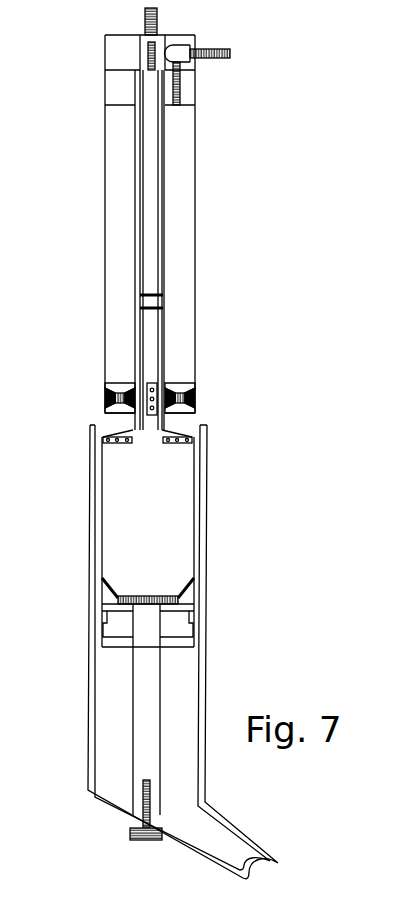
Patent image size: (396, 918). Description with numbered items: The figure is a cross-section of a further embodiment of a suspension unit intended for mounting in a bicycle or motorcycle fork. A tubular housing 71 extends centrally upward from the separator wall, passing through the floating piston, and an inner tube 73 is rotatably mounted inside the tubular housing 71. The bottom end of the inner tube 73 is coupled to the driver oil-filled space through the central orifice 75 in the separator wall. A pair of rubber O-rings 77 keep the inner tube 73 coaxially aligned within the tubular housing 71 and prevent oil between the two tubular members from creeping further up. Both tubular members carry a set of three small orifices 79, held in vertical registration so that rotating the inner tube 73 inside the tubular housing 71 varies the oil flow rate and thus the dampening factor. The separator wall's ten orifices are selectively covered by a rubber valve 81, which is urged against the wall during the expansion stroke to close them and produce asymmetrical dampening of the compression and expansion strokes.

The tubular housing 71 is at (165, 148).
The inner tube 73 is at (150, 210).
The rubber O-rings 77 is at (163, 295).
The small orifices 79 is at (154, 408).
The rubber valve 81 is at (102, 426).
The central orifice 75 is at (148, 445).